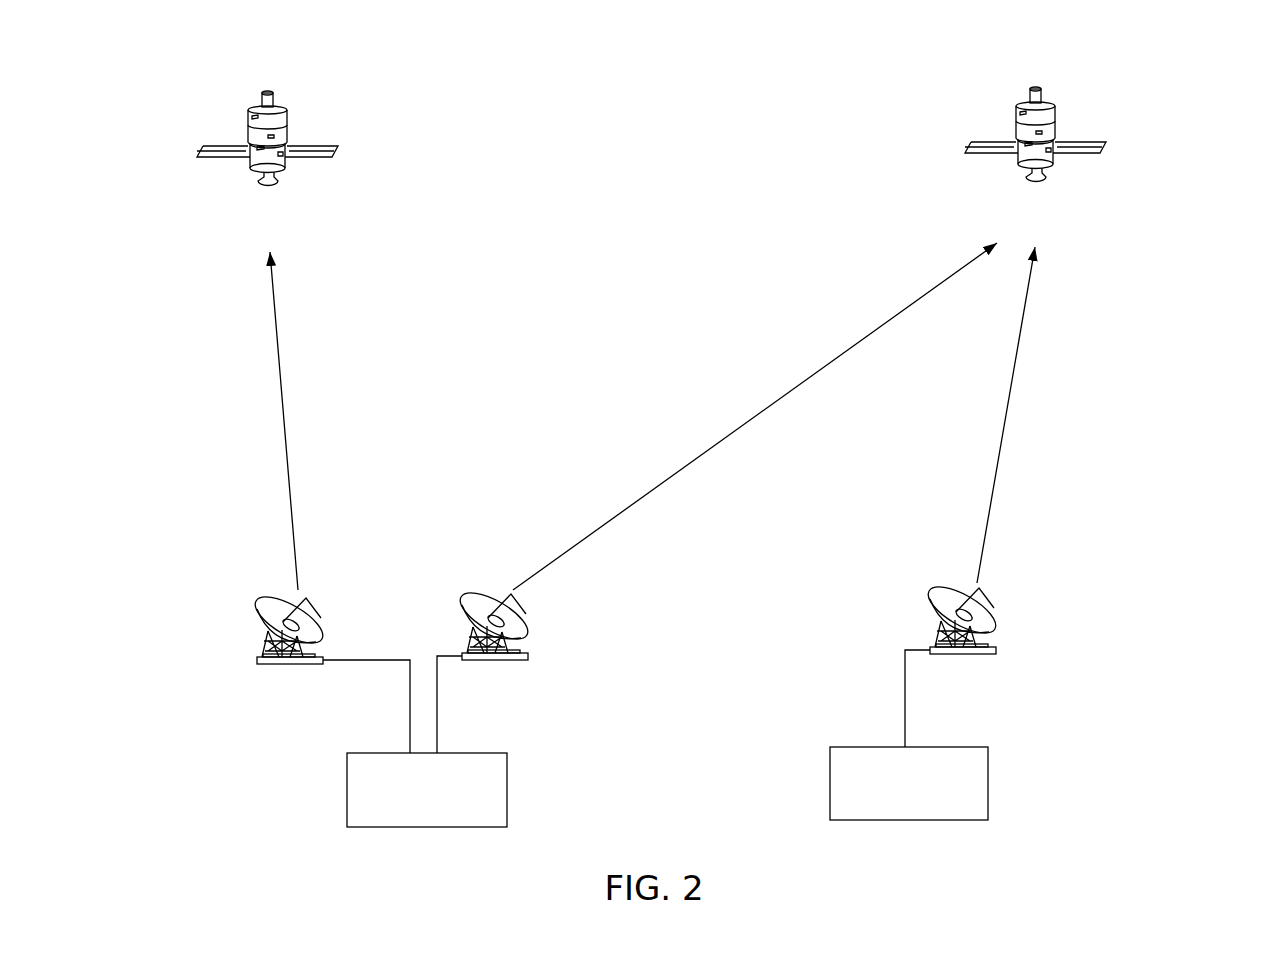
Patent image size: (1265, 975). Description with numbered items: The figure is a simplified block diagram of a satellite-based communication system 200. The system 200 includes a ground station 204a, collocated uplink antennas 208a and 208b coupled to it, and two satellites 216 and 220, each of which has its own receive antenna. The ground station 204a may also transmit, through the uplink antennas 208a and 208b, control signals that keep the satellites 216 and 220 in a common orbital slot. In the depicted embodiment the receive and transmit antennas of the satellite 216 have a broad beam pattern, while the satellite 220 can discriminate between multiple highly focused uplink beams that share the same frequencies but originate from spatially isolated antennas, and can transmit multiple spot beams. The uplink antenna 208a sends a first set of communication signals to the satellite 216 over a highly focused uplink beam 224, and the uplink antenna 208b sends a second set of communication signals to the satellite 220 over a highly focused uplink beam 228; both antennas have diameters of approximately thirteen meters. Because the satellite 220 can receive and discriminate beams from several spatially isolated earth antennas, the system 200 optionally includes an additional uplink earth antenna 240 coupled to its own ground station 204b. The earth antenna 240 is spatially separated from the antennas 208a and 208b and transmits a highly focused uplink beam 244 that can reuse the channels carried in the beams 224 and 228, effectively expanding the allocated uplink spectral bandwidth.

The satellite-based communication system 200 is at (1170, 85).
The satellite 216 is at (272, 92).
The satellite 220 is at (1043, 87).
The highly focused uplink beam 224 is at (287, 440).
The highly focused uplink beam 228 is at (773, 403).
The highly focused uplink beam 244 is at (1008, 402).
The uplink antenna 208a is at (255, 658).
The uplink antenna 208b is at (529, 655).
The uplink earth antenna 240 is at (997, 645).
The ground station 204a is at (508, 797).
The ground station 204b is at (990, 790).